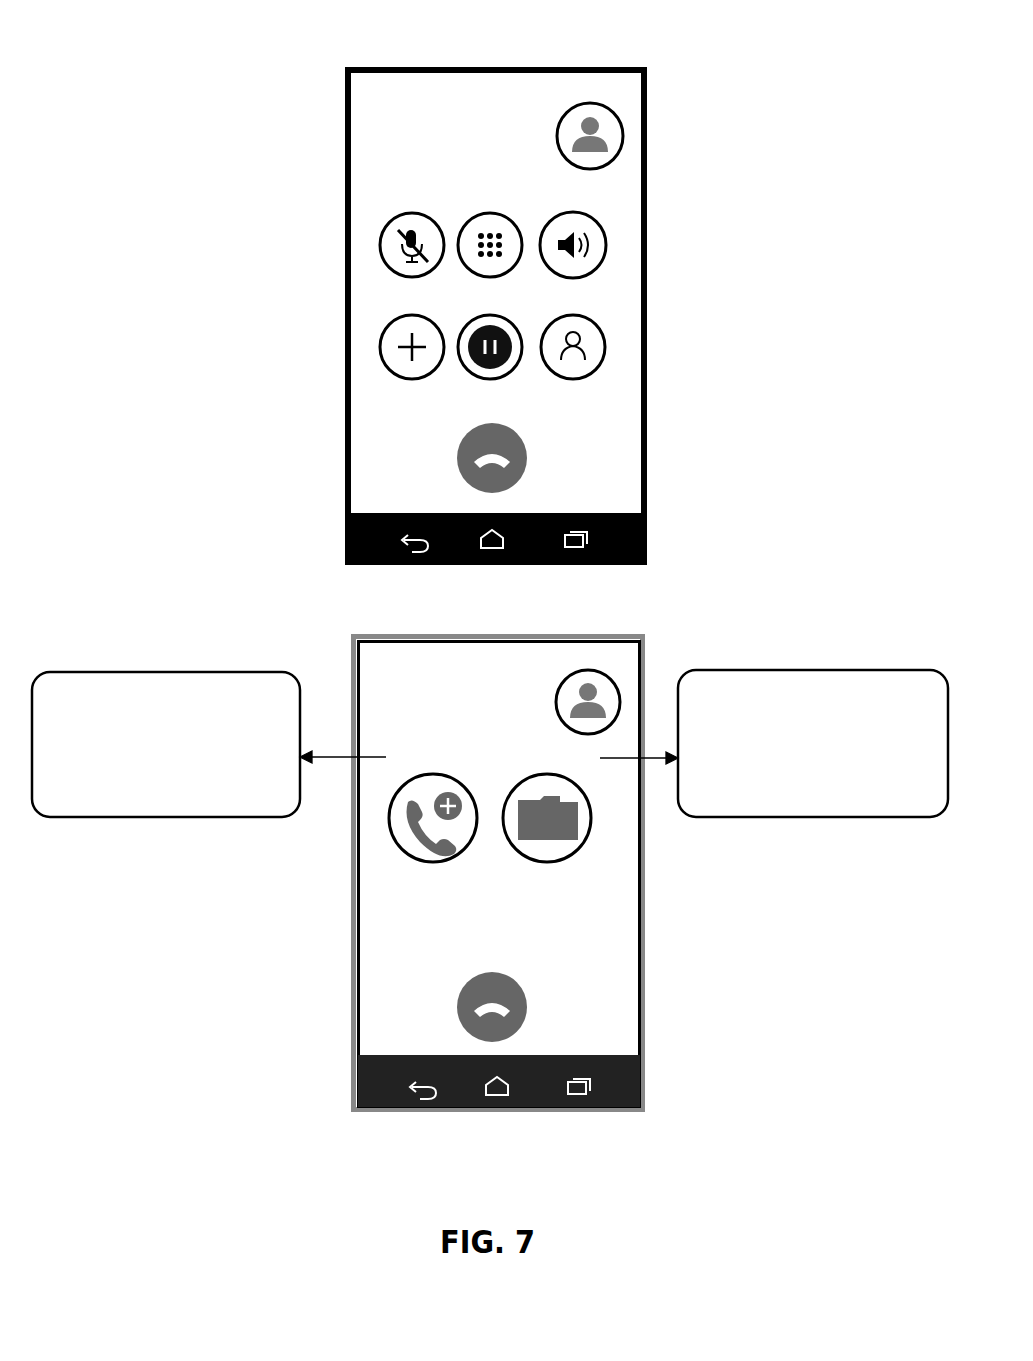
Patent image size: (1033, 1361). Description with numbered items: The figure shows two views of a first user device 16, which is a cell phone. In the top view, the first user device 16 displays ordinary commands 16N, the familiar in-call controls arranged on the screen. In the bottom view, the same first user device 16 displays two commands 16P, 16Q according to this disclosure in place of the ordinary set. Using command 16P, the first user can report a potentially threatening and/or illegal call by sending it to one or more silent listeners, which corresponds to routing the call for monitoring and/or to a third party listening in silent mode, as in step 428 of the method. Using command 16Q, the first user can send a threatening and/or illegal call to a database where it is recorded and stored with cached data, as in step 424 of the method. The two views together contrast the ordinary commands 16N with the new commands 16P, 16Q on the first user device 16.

The first user device 16 is at (586, 64).
The ordinary commands 16N is at (610, 195).
The command 16P is at (388, 827).
The command 16Q is at (590, 826).
The step 424 is at (817, 817).
The step 428 is at (100, 817).